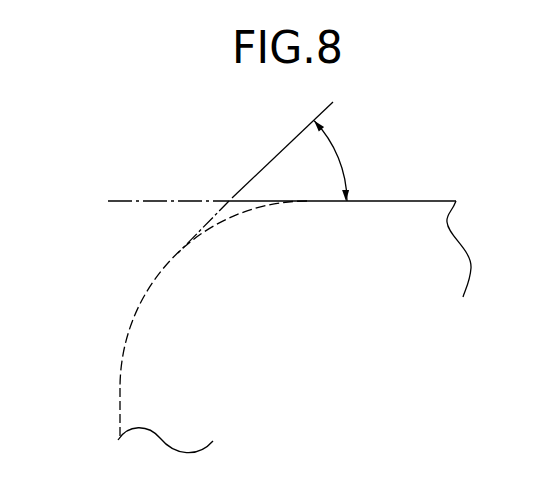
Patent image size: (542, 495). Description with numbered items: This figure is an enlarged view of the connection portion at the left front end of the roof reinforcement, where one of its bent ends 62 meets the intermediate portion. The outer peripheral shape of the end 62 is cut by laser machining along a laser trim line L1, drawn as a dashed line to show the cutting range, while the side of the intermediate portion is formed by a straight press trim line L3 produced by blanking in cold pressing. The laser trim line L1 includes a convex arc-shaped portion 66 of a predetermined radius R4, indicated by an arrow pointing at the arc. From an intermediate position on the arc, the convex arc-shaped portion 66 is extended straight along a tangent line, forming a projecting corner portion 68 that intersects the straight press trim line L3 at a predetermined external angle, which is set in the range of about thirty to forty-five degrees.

The end 62 is at (252, 277).
The convex arc-shaped portion 66 is at (153, 281).
The projecting corner portion 68 is at (229, 201).
The laser trim line L1 is at (118, 395).
The press trim line L3 is at (409, 200).
The radius R4 is at (158, 278).